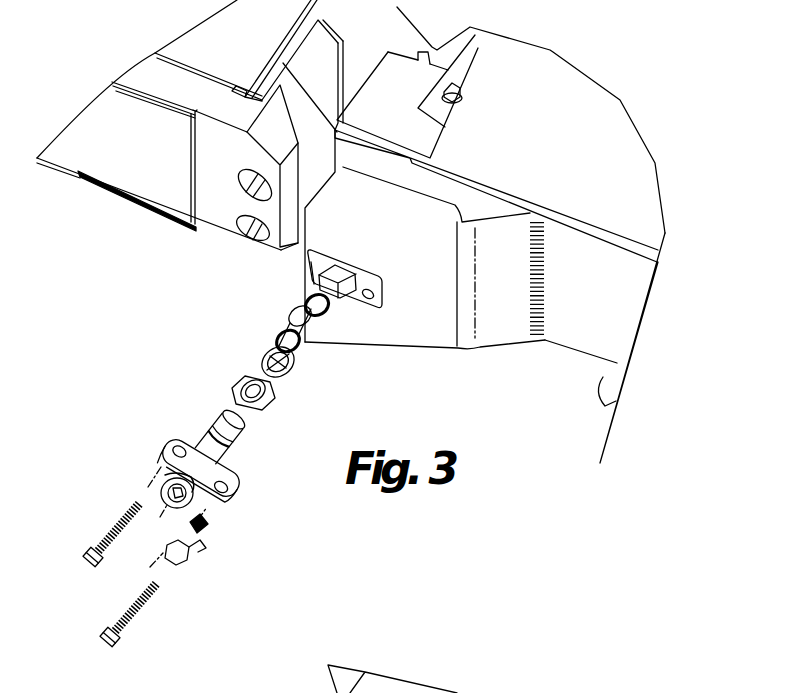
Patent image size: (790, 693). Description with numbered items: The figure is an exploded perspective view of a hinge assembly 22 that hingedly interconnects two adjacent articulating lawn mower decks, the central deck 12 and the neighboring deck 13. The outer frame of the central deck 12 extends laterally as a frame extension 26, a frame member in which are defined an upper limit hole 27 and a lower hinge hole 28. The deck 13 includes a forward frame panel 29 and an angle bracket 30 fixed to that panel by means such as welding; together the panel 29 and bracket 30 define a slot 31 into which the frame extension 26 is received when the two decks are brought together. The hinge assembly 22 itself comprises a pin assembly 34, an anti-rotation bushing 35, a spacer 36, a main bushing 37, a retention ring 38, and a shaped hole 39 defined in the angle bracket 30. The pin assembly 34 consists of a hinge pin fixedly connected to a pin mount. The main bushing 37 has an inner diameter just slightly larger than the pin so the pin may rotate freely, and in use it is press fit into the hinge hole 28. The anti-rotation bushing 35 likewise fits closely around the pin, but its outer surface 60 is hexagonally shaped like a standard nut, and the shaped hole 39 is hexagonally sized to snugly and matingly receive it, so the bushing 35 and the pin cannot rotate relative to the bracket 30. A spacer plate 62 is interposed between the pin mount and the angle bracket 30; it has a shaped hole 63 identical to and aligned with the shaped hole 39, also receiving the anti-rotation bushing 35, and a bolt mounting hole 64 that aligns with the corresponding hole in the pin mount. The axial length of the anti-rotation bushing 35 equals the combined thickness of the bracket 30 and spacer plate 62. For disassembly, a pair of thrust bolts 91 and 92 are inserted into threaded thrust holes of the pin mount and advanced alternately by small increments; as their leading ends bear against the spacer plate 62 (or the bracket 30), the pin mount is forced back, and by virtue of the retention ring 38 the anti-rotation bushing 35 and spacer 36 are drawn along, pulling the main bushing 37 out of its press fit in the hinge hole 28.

The central deck 12 is at (110, 193).
The deck 13 is at (555, 348).
The hinge assembly 22 is at (125, 478).
The frame extension 26 is at (213, 197).
The limit hole 27 is at (240, 174).
The hinge hole 28 is at (262, 246).
The forward frame panel 29 is at (583, 320).
The angle bracket 30 is at (435, 342).
The slot 31 is at (430, 183).
The pin assembly 34 is at (245, 463).
The anti-rotation bushing 35 is at (293, 412).
The spacer 36 is at (298, 372).
The main bushing 37 is at (308, 337).
The retention ring 38 is at (332, 315).
The shaped hole 39 is at (358, 283).
The outer surface 60 is at (237, 376).
The spacer plate 62 is at (352, 246).
The shaped hole 63 is at (310, 285).
The bolt mounting hole 64 is at (386, 303).
The thrust bolt 91 is at (92, 550).
The thrust bolt 92 is at (122, 624).